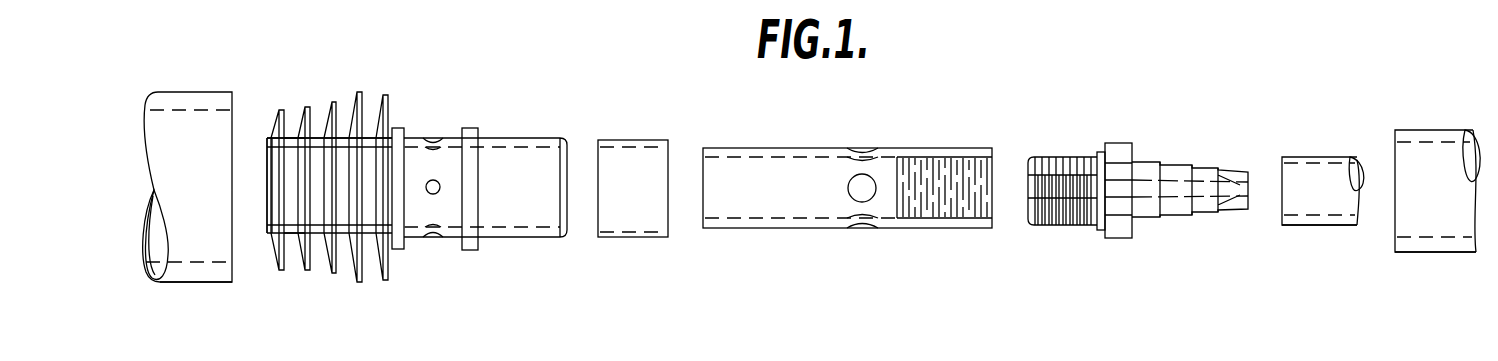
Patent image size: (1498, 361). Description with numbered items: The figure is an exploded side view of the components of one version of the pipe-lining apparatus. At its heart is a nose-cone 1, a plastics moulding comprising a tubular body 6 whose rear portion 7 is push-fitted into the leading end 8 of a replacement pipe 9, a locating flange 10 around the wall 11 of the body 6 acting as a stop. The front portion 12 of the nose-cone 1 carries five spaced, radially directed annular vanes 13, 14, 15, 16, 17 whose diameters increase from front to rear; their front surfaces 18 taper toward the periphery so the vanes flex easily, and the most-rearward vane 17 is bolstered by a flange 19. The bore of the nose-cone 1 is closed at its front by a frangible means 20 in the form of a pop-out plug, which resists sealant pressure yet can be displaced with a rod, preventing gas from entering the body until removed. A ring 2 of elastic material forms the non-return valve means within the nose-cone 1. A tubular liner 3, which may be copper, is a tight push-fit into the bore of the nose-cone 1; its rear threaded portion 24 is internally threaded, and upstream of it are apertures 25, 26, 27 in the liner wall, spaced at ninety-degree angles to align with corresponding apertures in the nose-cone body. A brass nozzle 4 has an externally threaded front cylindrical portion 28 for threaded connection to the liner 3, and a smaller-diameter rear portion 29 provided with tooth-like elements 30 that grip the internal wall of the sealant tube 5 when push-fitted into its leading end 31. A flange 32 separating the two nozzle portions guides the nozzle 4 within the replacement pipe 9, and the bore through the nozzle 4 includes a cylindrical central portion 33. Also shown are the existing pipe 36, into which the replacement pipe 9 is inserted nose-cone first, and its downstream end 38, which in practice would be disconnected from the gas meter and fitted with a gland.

The nose-cone 1 is at (410, 118).
The ring 2 is at (626, 140).
The tubular liner 3 is at (890, 148).
The nozzle 4 is at (1105, 143).
The tube 5 is at (1305, 157).
The tubular body 6 is at (450, 137).
The rear portion 7 is at (523, 238).
The leading end 8 is at (1405, 252).
The replacement pipe 9 is at (1418, 130).
The locating flange 10 is at (470, 128).
The wall 11 is at (450, 232).
The front portion 12 is at (345, 93).
The annular vane 13 is at (287, 264).
The annular vane 14 is at (310, 270).
The annular vane 15 is at (335, 273).
The annular vane 16 is at (363, 283).
The annular vane 17 is at (386, 280).
The front surfaces 18 is at (324, 112).
The flange 19 is at (400, 250).
The frangible means 20 is at (267, 186).
The threaded portion 24 is at (938, 216).
The aperture 25 is at (860, 230).
The aperture 26 is at (849, 189).
The aperture 27 is at (857, 148).
The front cylindrical portion 28 is at (1038, 155).
The rear portion 29 is at (1172, 162).
The tooth-like elements 30 is at (1145, 217).
The leading end 31 is at (1295, 225).
The flange 32 is at (1117, 238).
The cylindrical central portion 33 is at (1118, 190).
The existing pipe 36 is at (173, 92).
The downstream end 38 is at (210, 275).